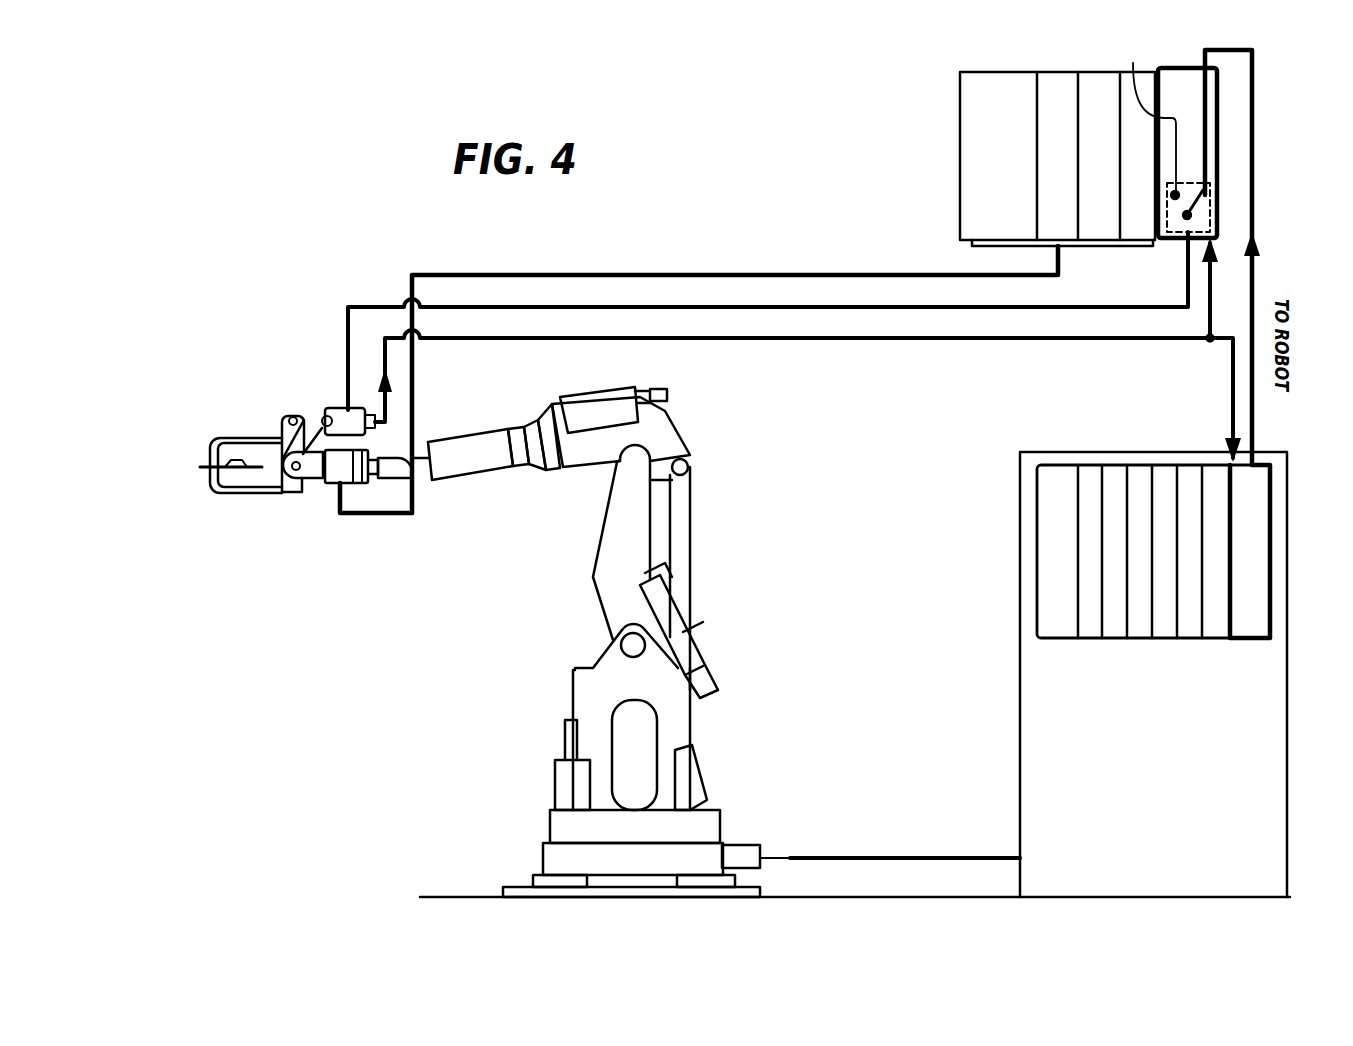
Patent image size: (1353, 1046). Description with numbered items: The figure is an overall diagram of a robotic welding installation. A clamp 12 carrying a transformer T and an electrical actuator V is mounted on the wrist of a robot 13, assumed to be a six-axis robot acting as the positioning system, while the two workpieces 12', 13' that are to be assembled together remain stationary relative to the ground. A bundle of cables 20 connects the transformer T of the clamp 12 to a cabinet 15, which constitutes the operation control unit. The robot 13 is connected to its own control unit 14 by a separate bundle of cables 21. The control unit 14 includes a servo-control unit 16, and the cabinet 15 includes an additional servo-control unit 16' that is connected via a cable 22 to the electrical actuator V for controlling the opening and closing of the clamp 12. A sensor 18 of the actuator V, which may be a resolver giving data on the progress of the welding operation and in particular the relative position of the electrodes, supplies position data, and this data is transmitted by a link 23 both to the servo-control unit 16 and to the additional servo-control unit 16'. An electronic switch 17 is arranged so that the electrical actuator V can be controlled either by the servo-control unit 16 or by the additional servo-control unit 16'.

The clamp 12 is at (337, 507).
The workpiece 12' is at (211, 449).
The robot 13 is at (586, 642).
The workpiece 13' is at (186, 483).
The control unit 14 is at (1070, 762).
The cabinet 15 is at (1000, 177).
The servo-control unit 16 is at (1186, 551).
The additional servo-control unit 16' is at (1219, 150).
The electronic switch 17 is at (1205, 208).
The sensor 18 is at (373, 417).
The bundle of cables 20 is at (763, 275).
The bundle of cables 21 is at (790, 858).
The cable 22 is at (805, 305).
The link 23 is at (843, 340).